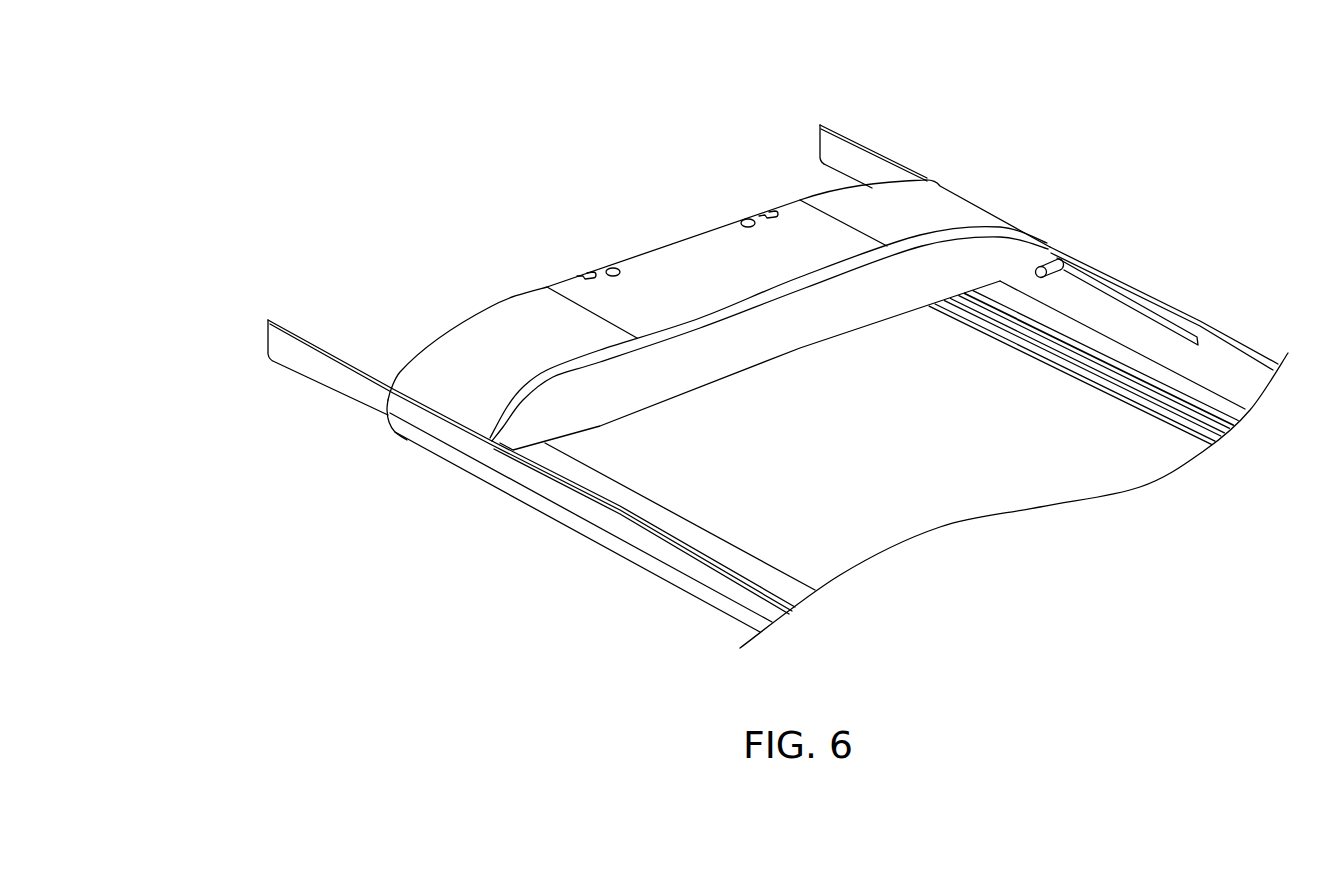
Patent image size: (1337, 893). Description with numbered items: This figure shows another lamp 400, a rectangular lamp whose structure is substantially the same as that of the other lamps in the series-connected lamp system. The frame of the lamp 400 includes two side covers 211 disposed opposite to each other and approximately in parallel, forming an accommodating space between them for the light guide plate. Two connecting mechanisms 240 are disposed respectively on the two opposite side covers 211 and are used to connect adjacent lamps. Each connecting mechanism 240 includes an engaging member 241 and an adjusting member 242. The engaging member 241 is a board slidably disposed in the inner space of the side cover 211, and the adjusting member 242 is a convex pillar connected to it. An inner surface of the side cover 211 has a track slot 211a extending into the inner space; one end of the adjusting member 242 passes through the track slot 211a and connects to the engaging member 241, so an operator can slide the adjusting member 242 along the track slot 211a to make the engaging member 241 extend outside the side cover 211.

The lamp 400 is at (1097, 213).
The connecting mechanism 240 is at (887, 133).
The engaging member 241 is at (845, 148).
The adjusting member 242 is at (1060, 278).
The side cover 211 is at (1246, 360).
The track slot 211a is at (1150, 315).